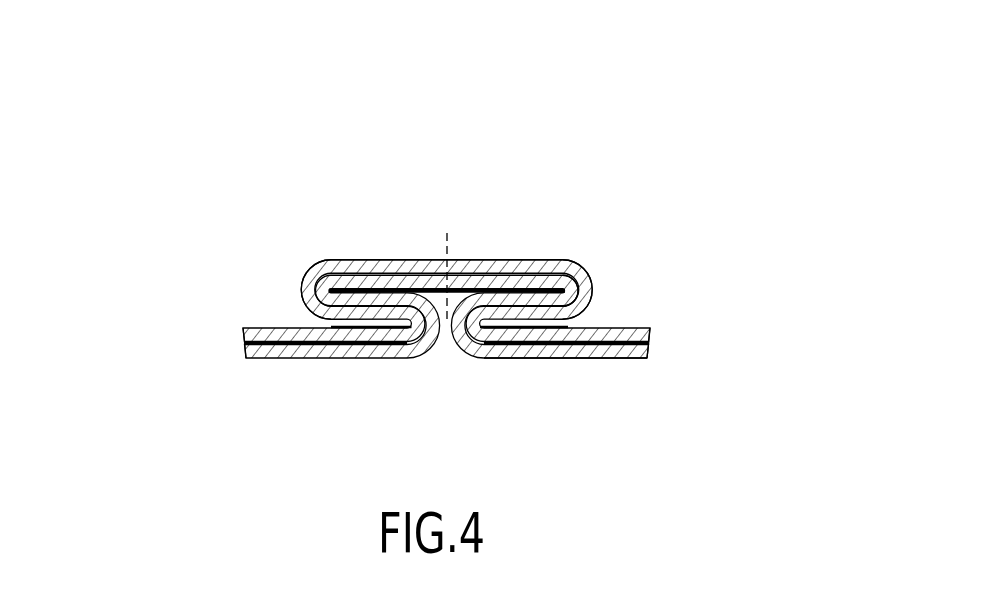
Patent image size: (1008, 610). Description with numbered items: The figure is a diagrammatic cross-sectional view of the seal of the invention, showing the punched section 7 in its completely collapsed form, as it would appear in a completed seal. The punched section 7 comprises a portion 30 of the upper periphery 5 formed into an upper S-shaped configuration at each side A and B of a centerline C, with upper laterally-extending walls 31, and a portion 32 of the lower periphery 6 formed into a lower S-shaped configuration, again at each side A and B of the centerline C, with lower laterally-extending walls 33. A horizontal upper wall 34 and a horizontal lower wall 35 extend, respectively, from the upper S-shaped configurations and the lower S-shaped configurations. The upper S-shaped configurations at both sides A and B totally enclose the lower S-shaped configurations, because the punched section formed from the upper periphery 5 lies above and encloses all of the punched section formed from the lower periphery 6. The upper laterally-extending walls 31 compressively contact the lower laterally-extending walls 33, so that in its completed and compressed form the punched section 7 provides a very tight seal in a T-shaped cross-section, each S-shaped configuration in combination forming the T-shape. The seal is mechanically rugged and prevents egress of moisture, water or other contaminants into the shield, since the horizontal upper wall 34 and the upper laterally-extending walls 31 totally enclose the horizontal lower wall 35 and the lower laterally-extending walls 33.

The upper periphery 5 is at (594, 284).
The lower periphery 6 is at (455, 350).
The punched section 7 is at (277, 238).
The portion of the upper periphery 30 is at (522, 152).
The upper laterally-extending walls 31 is at (316, 318).
The portion of the lower periphery 32 is at (403, 292).
The lower laterally-extending walls 33 is at (367, 306).
The horizontal upper wall 34 is at (502, 260).
The horizontal lower wall 35 is at (590, 280).
The side A is at (788, 245).
The side B is at (172, 297).
The centerline C is at (450, 233).